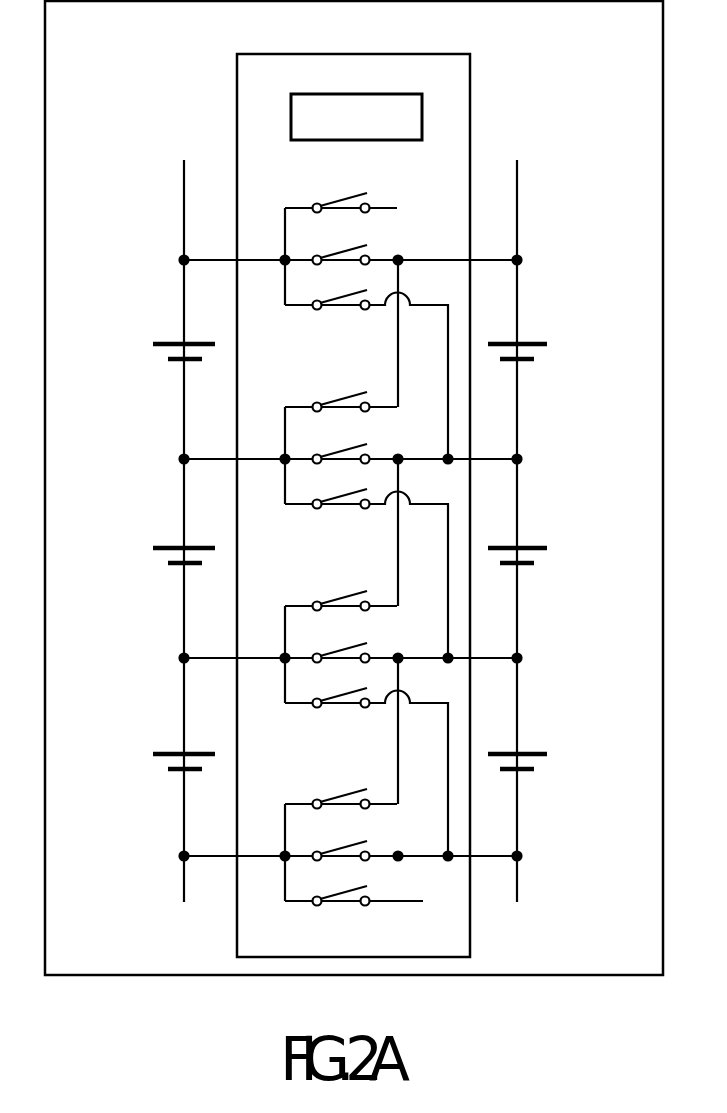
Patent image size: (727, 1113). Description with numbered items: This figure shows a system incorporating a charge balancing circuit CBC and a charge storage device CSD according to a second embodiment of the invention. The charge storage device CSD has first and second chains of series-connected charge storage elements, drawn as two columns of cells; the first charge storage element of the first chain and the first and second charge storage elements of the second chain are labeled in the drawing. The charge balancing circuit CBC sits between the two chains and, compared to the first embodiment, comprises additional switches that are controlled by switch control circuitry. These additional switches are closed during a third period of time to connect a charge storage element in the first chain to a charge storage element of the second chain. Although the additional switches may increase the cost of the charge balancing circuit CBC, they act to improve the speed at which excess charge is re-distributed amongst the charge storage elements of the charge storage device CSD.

The charge storage device CSD is at (354, 488).
The charge balancing circuit CBC is at (353, 505).